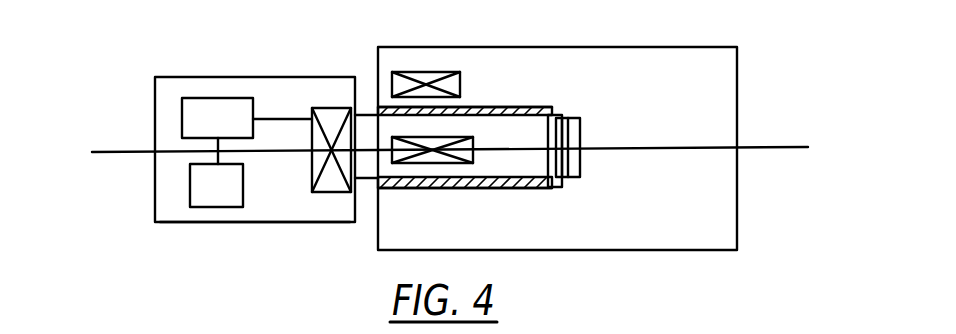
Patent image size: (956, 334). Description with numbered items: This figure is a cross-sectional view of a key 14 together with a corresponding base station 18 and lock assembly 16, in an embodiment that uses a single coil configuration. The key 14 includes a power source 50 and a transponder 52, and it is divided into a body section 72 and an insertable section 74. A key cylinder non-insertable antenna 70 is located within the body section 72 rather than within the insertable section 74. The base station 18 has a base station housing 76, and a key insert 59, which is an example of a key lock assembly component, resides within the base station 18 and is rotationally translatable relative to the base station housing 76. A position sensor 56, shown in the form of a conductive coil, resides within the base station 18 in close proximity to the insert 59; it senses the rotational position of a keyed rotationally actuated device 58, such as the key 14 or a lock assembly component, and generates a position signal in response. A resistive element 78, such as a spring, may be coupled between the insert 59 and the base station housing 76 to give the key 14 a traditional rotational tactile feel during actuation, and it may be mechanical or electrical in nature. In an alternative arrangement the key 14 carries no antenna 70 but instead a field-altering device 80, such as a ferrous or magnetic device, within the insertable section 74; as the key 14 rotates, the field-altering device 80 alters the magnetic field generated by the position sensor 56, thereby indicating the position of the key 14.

The key 14 is at (207, 77).
The lock assembly 16 is at (558, 110).
The base station 18 is at (475, 47).
The power source 50 is at (190, 183).
The transponder 52 is at (182, 119).
The position sensor 56 is at (428, 72).
The keyed rotationally actuated device 58 is at (505, 188).
The key insert 59 is at (510, 108).
The key cylinder non-insertable antenna 70 is at (335, 192).
The body section 72 is at (222, 222).
The insertable section 74 is at (538, 187).
The base station housing 76 is at (592, 47).
The resistive element 78 is at (783, 146).
The field-altering device 80 is at (423, 163).